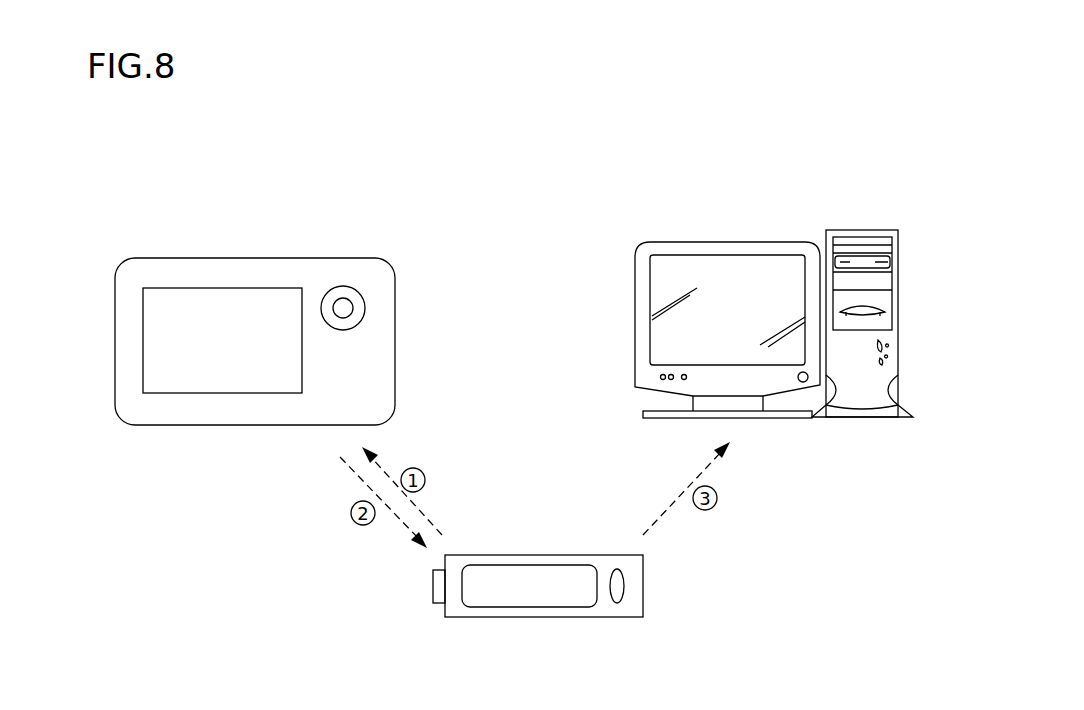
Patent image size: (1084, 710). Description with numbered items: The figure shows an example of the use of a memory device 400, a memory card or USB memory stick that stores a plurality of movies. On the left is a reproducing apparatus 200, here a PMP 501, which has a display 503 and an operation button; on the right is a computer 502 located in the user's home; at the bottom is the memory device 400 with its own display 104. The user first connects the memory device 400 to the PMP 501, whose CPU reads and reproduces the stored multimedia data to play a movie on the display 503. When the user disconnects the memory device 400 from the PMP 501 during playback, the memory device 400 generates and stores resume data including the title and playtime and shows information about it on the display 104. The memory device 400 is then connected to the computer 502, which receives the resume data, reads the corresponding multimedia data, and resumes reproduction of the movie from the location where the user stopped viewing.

The reproducing apparatus 200 is at (271, 338).
The PMP 501 is at (352, 258).
The display 503 is at (212, 373).
The computer 502 is at (707, 242).
The memory device 400 is at (576, 618).
The display 104 is at (505, 600).